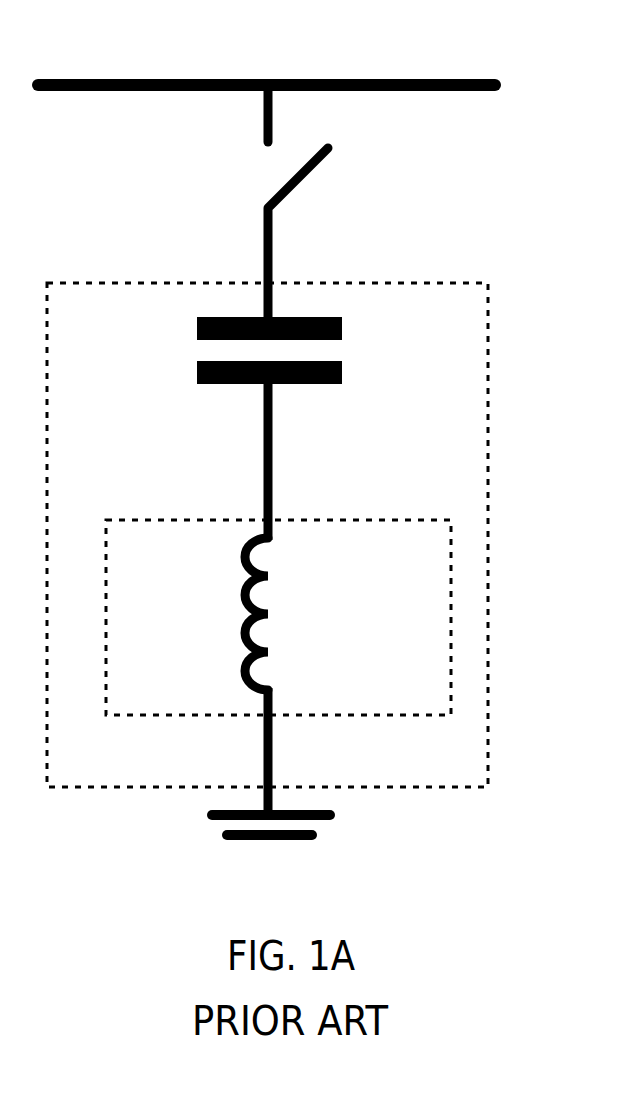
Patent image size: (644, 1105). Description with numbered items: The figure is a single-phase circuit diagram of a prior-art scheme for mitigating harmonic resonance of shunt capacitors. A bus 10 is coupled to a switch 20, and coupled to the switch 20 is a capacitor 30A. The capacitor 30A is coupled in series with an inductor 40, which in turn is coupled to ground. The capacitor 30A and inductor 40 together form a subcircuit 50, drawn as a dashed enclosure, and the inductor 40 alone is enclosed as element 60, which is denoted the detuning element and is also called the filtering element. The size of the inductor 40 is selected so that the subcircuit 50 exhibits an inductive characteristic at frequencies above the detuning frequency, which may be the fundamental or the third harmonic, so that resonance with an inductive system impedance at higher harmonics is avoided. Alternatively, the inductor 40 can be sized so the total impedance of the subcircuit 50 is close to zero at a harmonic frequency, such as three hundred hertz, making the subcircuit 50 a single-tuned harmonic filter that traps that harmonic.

The bus 10 is at (355, 78).
The switch 20 is at (307, 177).
The capacitor 30A is at (317, 385).
The inductor 40 is at (240, 632).
The subcircuit 50 is at (152, 283).
The detuning element 60 is at (213, 518).